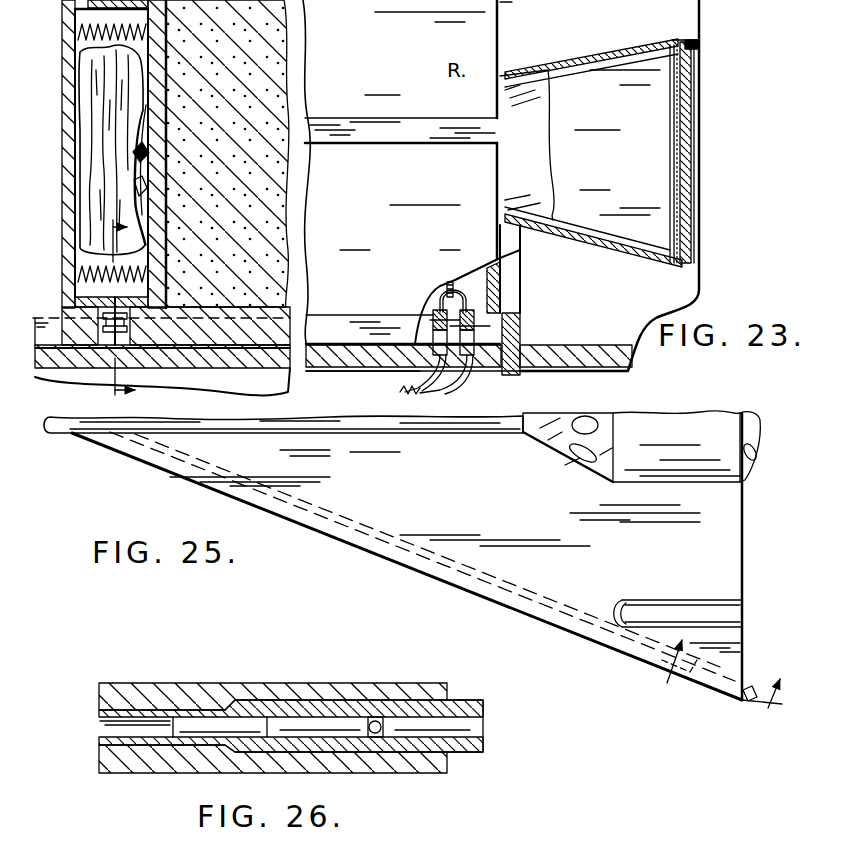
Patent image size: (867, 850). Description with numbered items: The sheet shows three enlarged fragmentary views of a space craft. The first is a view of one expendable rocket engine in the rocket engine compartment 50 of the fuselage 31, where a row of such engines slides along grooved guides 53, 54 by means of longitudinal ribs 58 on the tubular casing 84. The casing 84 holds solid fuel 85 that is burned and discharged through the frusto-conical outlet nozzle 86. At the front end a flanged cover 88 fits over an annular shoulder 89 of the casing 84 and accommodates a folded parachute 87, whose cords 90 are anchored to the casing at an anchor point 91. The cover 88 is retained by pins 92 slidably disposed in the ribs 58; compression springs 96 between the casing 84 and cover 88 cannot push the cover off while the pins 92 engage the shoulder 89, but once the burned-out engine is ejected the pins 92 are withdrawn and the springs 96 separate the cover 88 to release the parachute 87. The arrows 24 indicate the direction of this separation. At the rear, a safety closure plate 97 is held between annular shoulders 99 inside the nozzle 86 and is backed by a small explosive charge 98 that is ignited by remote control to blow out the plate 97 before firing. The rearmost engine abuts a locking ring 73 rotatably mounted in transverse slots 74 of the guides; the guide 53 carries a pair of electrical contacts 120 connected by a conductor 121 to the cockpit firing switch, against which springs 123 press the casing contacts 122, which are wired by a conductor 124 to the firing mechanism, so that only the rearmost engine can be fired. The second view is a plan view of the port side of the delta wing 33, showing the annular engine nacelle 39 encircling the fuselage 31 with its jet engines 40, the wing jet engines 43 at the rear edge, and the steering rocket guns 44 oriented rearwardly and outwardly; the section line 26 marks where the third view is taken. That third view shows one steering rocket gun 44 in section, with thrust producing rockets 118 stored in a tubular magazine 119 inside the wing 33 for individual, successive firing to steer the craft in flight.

In FIG. 23, the direction of movement arrow 24 is at (116, 308).
In FIG. 25, the section line 26— 26 is at (712, 692).
In FIG. 25, the fuselage 31 is at (457, 433).
In FIG. 25, the delta wing 33 is at (402, 567).
In FIG. 26, the delta wing 33 is at (177, 674).
In FIG. 25, the annular engine nacelle 39 is at (692, 460).
In FIG. 25, the jet engines 40 is at (752, 450).
In FIG. 25, the jet engines 43 is at (678, 612).
In FIG. 25, the steering rocket guns 44 is at (749, 688).
In FIG. 26, the steering rocket guns 44 is at (473, 703).
In FIG. 23, the rocket engine compartment 50 is at (609, 185).
In FIG. 23, the guide 53 is at (361, 394).
In FIG. 23, the guide 54 is at (551, 9).
In FIG. 23, the longitudinal ribs 58 is at (390, 132).
In FIG. 23, the locking ring 73 is at (510, 272).
In FIG. 23, the transverse slots 74 is at (524, 350).
In FIG. 23, the tubular casing 84 is at (400, 171).
In FIG. 23, the solid fuel 85 is at (273, 78).
In FIG. 23, the outlet nozzle 86 is at (607, 56).
In FIG. 23, the parachute 87 is at (90, 98).
In FIG. 23, the flanged cover 88 is at (62, 63).
In FIG. 23, the annular shoulder 89 is at (100, 297).
In FIG. 23, the parachute cords 90 is at (148, 190).
In FIG. 23, the anchor point 91 is at (148, 156).
In FIG. 23, the pins 92 is at (63, 3).
In FIG. 23, the compression springs 96 is at (76, 41).
In FIG. 23, the safety closure plate 97 is at (695, 190).
In FIG. 23, the explosive charge 98 is at (677, 167).
In FIG. 23, the annular shoulders 99 is at (688, 258).
In FIG. 26, the thrust producing rockets 118 is at (300, 723).
In FIG. 25, the tubular magazines 119 is at (323, 538).
In FIG. 26, the tubular magazines 119 is at (112, 708).
In FIG. 23, the electrical contacts 120 is at (437, 350).
In FIG. 23, the conductor 121 is at (413, 398).
In FIG. 23, the contacts 122 is at (437, 337).
In FIG. 23, the springs 123 is at (433, 318).
In FIG. 23, the conductor 124 is at (448, 284).